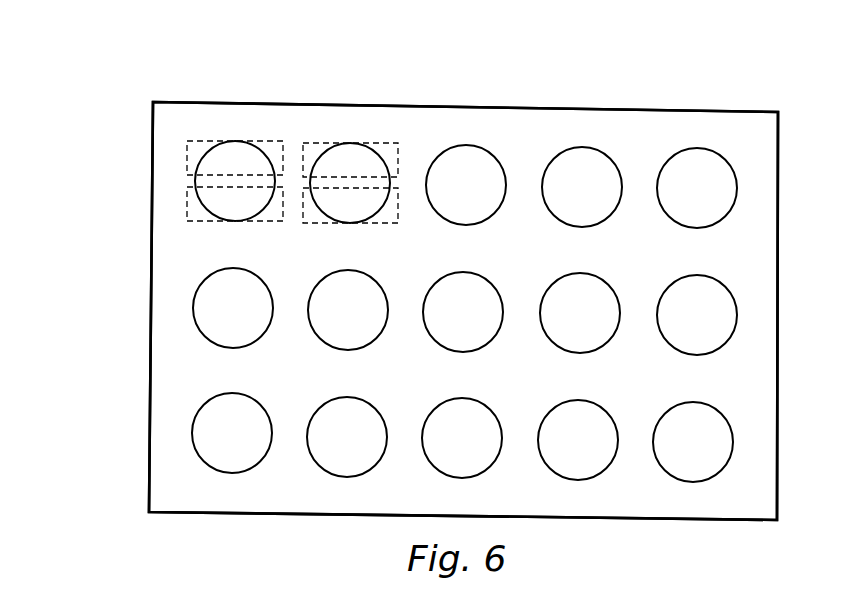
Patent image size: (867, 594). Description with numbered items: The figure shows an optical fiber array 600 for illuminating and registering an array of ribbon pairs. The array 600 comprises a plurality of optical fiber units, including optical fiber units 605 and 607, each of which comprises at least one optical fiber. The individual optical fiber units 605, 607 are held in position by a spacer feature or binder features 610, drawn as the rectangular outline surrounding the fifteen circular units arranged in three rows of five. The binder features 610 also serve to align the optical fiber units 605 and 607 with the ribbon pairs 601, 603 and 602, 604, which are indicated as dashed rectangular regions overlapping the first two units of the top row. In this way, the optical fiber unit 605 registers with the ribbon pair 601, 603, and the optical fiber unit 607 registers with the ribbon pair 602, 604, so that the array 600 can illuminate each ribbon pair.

The optical fiber array 600 is at (98, 80).
The ribbon pair 601 is at (187, 157).
The ribbon pair 602 is at (398, 160).
The ribbon pair 603 is at (187, 200).
The ribbon pair 604 is at (398, 207).
The optical fiber unit 605 is at (233, 142).
The optical fiber unit 607 is at (353, 143).
The spacer feature or binder features 610 is at (777, 270).